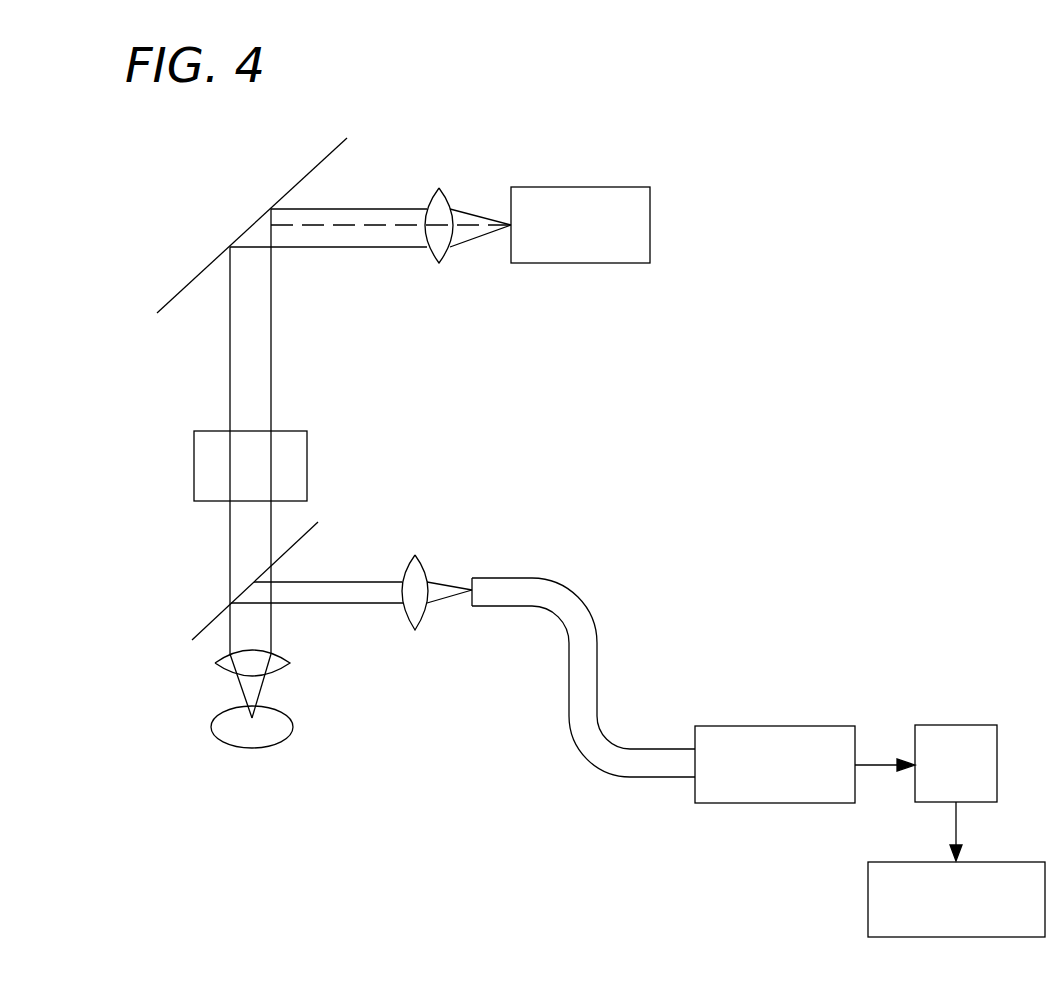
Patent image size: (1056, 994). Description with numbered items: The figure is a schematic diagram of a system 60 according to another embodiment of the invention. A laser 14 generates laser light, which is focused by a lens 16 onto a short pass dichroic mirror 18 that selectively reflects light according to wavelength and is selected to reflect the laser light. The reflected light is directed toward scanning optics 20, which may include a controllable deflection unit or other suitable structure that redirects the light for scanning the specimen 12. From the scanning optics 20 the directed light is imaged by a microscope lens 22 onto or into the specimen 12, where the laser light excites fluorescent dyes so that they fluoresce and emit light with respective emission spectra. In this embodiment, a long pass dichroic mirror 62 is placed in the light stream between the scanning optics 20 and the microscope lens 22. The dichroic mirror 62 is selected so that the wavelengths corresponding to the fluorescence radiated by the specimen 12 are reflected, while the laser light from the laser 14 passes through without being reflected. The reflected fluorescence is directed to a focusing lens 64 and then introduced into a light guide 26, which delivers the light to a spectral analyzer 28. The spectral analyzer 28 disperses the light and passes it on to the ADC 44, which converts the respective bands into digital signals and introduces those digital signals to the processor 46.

The specimen 12 is at (212, 727).
The laser 14 is at (613, 187).
The lens 16 is at (441, 186).
The short pass dichroic mirror 18 is at (331, 152).
The scanning optics 20 is at (307, 443).
The microscope lens 22 is at (215, 664).
The light guide 26 is at (558, 617).
The spectral analyzer 28 is at (797, 726).
The ADC 44 is at (960, 725).
The processor 46 is at (983, 862).
The system 60 is at (90, 384).
The long pass dichroic mirror 62 is at (208, 620).
The focusing lens 64 is at (415, 555).